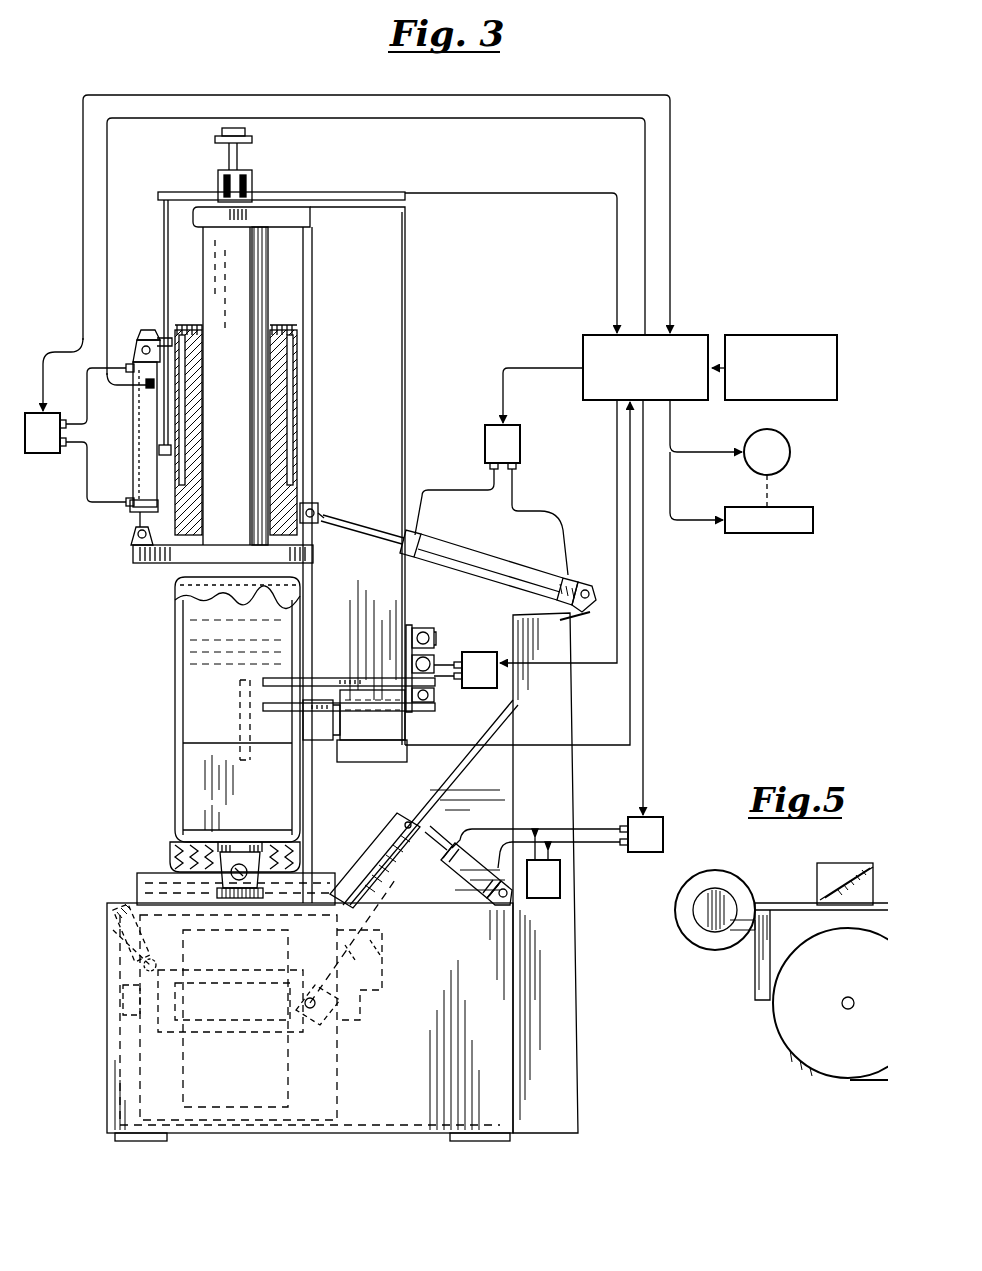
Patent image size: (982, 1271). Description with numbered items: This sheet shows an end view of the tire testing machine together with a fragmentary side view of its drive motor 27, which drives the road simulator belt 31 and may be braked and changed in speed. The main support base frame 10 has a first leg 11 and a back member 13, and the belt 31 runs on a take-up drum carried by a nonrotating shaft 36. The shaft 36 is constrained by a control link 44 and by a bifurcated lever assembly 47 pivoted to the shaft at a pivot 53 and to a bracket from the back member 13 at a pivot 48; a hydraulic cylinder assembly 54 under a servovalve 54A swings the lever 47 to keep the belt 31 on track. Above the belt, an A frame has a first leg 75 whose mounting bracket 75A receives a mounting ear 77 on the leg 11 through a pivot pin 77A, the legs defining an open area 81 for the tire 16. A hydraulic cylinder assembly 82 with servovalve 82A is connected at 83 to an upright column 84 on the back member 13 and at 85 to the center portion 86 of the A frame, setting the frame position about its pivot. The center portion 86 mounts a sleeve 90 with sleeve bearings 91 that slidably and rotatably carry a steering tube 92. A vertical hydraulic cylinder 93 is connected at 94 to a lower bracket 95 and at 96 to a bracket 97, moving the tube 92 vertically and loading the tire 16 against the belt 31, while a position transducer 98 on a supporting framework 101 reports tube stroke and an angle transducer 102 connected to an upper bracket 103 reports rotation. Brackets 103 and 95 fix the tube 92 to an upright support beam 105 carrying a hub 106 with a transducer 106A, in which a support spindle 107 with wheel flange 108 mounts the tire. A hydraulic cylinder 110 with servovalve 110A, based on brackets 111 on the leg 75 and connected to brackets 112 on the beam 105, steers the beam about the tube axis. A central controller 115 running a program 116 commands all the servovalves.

In FIG. 3, the main support base frame 10 is at (592, 1015).
In FIG. 3, the first leg 11 is at (352, 1112).
In FIG. 3, the back member 13 is at (492, 1102).
In FIG. 3, the tire 16 is at (190, 578).
In FIG. 3, the motor 27 is at (790, 452).
In FIG. 5, the motor 27 is at (790, 1040).
In FIG. 3, the belt 31 is at (244, 874).
In FIG. 3, the shaft 36 is at (230, 1040).
In FIG. 3, the control link 44 is at (112, 952).
In FIG. 3, the lever assembly 47 is at (424, 804).
In FIG. 3, the pivot 48 is at (352, 944).
In FIG. 3, the pivot 53 is at (318, 1010).
In FIG. 3, the hydraulic cylinder assembly 54 is at (452, 845).
In FIG. 3, the servovalve 54A is at (665, 818).
In FIG. 3, the first leg 75 is at (190, 728).
In FIG. 3, the mounting bracket 75A is at (178, 846).
In FIG. 3, the mounting ear 77 is at (247, 897).
In FIG. 3, the pivot pin 77A is at (180, 862).
In FIG. 3, the open area 81 is at (158, 630).
In FIG. 3, the hydraulic cylinder assembly 82 is at (470, 552).
In FIG. 3, the servovalve 82A is at (485, 423).
In FIG. 3, the base end connection 83 is at (580, 583).
In FIG. 3, the upright column 84 is at (568, 716).
In FIG. 3, the rod end connection 85 is at (313, 505).
In FIG. 3, the center portion 86 is at (300, 392).
In FIG. 3, the sleeve 90 is at (282, 335).
In FIG. 3, the sleeve bearings 91 is at (270, 335).
In FIG. 3, the steering tube 92 is at (240, 346).
In FIG. 3, the vertical hydraulic cylinder 93 is at (140, 447).
In FIG. 3, the rod end connection 94 is at (131, 540).
In FIG. 3, the bracket 95 is at (133, 562).
In FIG. 3, the base end connection 96 is at (140, 340).
In FIG. 3, the bracket 97 is at (147, 330).
In FIG. 3, the position transducer 98 is at (166, 408).
In FIG. 3, the supporting framework 101 is at (248, 185).
In FIG. 3, the angle transducer 102 is at (240, 172).
In FIG. 3, the upper bracket 103 is at (215, 208).
In FIG. 3, the upright support beam 105 is at (405, 325).
In FIG. 3, the hub 106 is at (365, 700).
In FIG. 3, the transducer 106A is at (382, 755).
In FIG. 3, the support spindle 107 is at (312, 742).
In FIG. 3, the wheel flange 108 is at (248, 760).
In FIG. 3, the hydraulic cylinder 110 is at (430, 672).
In FIG. 3, the servovalve 110A is at (488, 626).
In FIG. 3, the brackets 111 is at (392, 712).
In FIG. 3, the brackets 112 is at (430, 628).
In FIG. 3, the central controller 115 is at (690, 335).
In FIG. 3, the program 116 is at (812, 335).